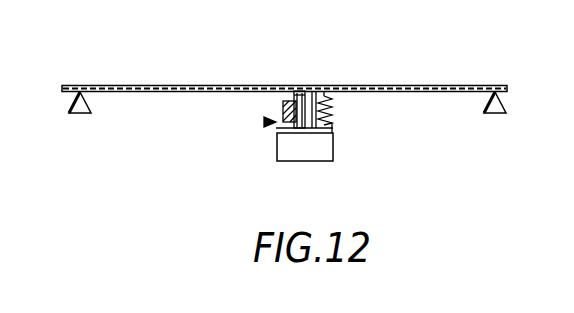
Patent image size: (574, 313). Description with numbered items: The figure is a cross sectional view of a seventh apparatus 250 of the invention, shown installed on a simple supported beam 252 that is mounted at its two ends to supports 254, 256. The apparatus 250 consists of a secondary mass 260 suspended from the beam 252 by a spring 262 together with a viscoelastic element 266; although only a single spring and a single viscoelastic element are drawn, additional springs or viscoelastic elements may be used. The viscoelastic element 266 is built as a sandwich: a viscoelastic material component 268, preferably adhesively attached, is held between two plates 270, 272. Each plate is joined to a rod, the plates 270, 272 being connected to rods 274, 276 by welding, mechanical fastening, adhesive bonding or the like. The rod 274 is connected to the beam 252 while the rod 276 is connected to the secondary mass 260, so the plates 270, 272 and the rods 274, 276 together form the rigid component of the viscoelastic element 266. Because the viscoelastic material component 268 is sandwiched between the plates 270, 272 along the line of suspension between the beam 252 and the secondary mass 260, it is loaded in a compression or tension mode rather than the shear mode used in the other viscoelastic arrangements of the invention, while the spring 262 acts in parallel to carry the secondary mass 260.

The apparatus 250 is at (392, 171).
The simple supported beam 252 is at (211, 85).
The support 254 is at (72, 98).
The support 256 is at (497, 113).
The secondary mass 260 is at (307, 161).
The spring 262 is at (330, 125).
The viscoelastic element 266 is at (266, 122).
The viscoelastic material component 268 is at (283, 110).
The plate 270 is at (303, 85).
The plate 272 is at (276, 128).
The rod 274 is at (292, 99).
The rod 276 is at (313, 85).